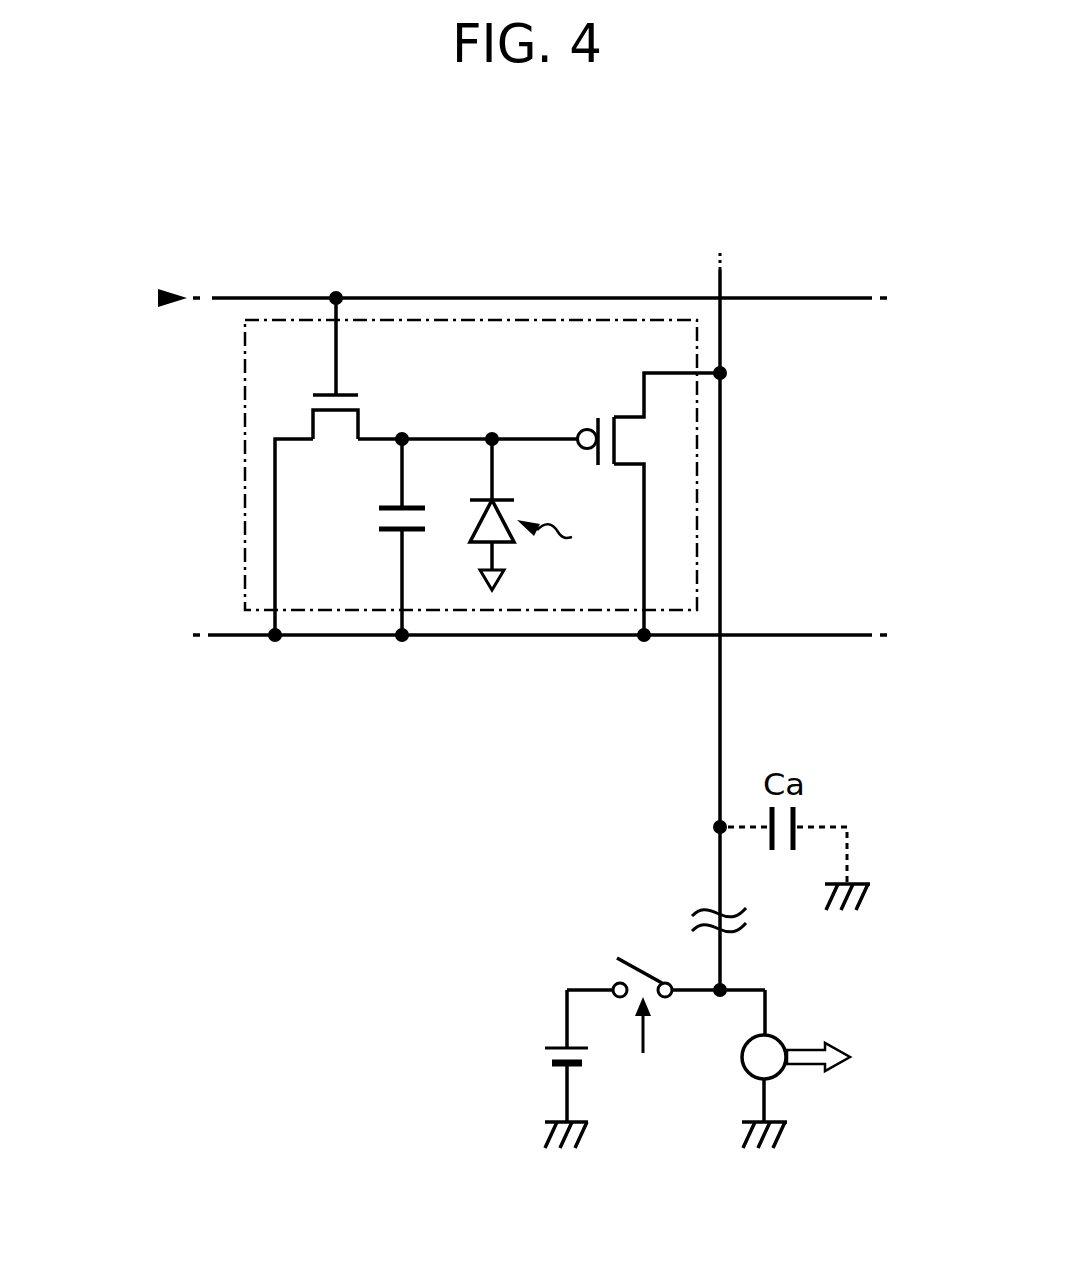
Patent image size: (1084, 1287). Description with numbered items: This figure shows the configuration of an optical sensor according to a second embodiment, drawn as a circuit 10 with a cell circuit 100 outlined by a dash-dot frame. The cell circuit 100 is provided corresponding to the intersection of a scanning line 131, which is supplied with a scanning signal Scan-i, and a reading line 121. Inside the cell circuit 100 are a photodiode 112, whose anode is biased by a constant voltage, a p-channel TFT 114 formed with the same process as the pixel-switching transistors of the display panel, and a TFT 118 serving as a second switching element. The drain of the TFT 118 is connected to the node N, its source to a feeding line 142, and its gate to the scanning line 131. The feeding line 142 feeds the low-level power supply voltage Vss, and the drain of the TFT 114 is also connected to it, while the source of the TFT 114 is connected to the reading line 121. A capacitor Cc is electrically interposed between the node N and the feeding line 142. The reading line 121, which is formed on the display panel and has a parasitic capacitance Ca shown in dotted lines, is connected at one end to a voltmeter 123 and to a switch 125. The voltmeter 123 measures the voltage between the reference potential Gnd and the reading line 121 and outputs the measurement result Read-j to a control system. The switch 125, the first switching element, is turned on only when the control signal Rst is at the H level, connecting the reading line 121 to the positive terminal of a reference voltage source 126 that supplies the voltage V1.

The pixel circuit 10 is at (634, 245).
The cell circuit 100 is at (245, 388).
The photodiode 112 is at (473, 523).
The TFT 114 is at (623, 415).
The TFT 118 is at (315, 430).
The reading line 121 is at (718, 708).
The voltmeter 123 is at (790, 1035).
The switch 125 is at (642, 963).
The reference voltage source 126 is at (547, 1050).
The scanning line 131 is at (803, 298).
The feeding line 142 is at (802, 635).